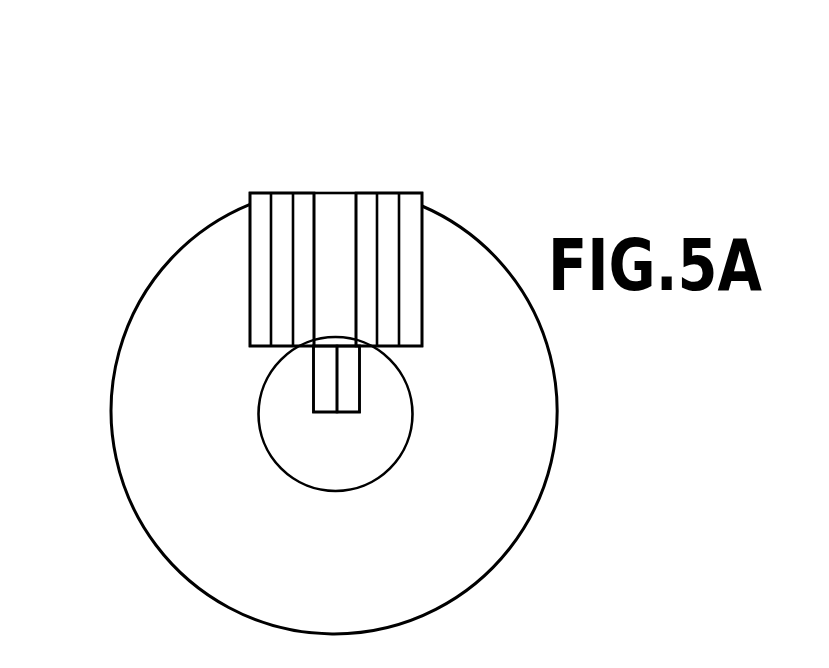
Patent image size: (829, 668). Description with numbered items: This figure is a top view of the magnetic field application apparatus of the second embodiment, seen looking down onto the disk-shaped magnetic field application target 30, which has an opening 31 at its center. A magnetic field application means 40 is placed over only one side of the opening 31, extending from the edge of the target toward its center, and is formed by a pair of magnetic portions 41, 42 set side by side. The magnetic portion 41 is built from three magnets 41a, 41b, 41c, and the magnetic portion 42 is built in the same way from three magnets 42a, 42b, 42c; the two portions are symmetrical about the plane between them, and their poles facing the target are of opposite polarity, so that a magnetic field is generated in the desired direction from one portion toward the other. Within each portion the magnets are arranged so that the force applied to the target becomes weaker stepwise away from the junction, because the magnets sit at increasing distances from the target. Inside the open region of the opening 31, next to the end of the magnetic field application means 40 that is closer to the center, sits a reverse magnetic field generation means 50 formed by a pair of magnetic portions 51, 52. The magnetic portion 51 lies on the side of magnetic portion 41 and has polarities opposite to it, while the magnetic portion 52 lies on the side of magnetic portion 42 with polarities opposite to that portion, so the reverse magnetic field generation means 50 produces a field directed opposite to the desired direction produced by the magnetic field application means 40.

The magnetic field application target 30 is at (126, 411).
The opening 31 is at (263, 433).
The magnetic field application means 40 is at (443, 56).
The magnetic portion 41 is at (305, 97).
The magnet 41a is at (303, 193).
The magnet 41b is at (280, 193).
The magnet 41c is at (260, 193).
The magnetic portion 42 is at (490, 118).
The magnet 42a is at (363, 193).
The magnet 42b is at (386, 193).
The magnet 42c is at (407, 193).
The reverse magnetic field generation means 50 is at (465, 355).
The magnetic portion 51 is at (326, 400).
The magnetic portion 52 is at (347, 380).